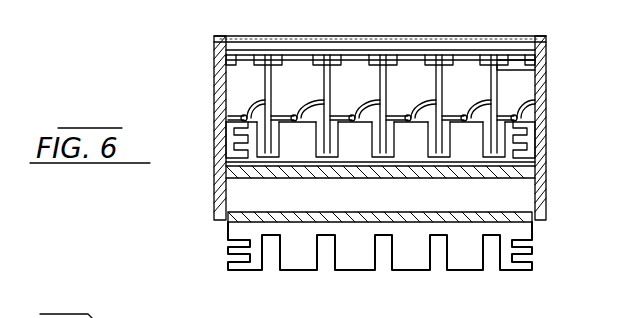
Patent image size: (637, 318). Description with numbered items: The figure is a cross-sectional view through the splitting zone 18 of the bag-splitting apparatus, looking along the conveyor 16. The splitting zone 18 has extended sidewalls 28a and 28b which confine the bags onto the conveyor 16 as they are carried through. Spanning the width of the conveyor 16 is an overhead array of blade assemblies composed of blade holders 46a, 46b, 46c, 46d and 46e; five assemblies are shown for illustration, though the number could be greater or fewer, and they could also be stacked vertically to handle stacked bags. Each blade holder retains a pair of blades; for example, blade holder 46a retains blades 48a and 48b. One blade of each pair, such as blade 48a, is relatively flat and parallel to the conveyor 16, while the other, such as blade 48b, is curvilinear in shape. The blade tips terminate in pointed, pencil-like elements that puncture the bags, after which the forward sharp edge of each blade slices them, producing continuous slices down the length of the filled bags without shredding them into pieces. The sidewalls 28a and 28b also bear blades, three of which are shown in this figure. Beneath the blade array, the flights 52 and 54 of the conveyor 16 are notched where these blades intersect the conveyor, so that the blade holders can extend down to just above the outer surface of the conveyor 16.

The conveyor 16 is at (512, 179).
The splitting zone 18 is at (333, 309).
The extended sidewall 28a is at (546, 60).
The extended sidewall 28b is at (214, 67).
The blade holder 46a is at (499, 67).
The blade holder 46b is at (442, 85).
The blade holder 46c is at (386, 85).
The blade holder 46d is at (330, 85).
The blade holder 46e is at (271, 85).
The blade 48a is at (515, 116).
The blade 48b is at (493, 92).
The flight 52 is at (468, 263).
The flight 54 is at (478, 153).